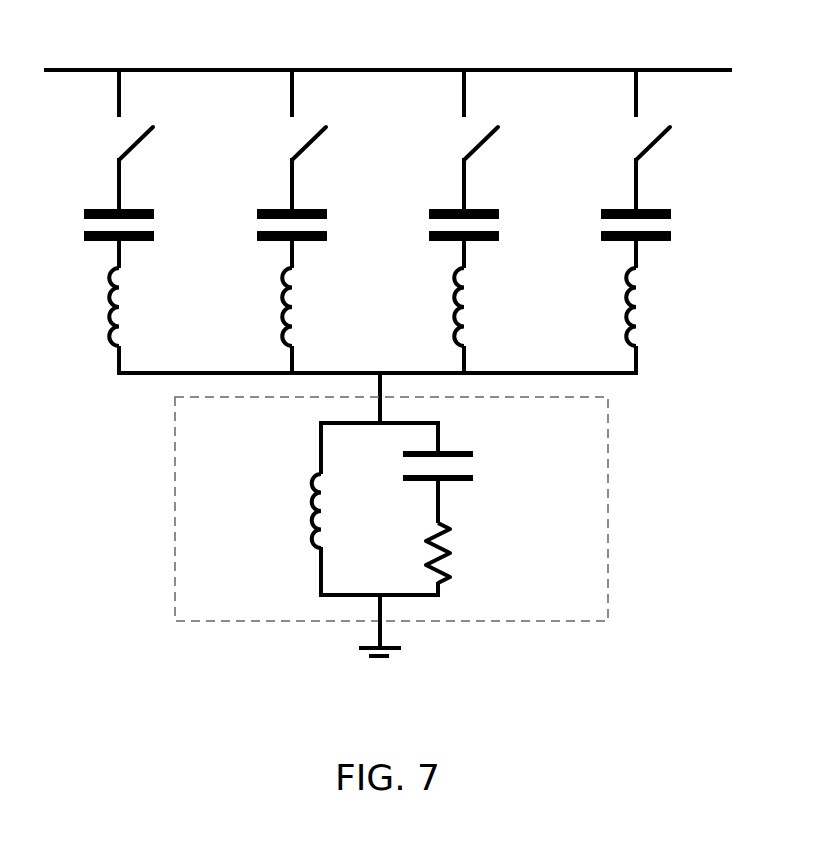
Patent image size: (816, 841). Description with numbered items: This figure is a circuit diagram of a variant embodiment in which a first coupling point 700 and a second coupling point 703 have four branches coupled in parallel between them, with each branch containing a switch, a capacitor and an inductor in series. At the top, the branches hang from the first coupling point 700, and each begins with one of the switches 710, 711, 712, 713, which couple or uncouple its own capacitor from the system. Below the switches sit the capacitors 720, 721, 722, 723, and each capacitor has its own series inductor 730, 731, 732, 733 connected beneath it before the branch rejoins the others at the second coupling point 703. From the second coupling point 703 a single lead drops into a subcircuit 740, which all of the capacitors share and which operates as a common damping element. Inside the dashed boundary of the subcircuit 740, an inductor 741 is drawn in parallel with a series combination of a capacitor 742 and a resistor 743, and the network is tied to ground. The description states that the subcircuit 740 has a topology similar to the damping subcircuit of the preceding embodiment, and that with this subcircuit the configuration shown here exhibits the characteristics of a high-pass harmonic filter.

The first coupling point 700 is at (350, 68).
The second coupling point 703 is at (610, 375).
The switch 710 is at (137, 145).
The switch 711 is at (310, 145).
The switch 712 is at (481, 145).
The switch 713 is at (654, 147).
The capacitor 720 is at (100, 209).
The capacitor 721 is at (272, 209).
The capacitor 722 is at (450, 209).
The capacitor 723 is at (618, 209).
The series inductor 730 is at (103, 300).
The series inductor 731 is at (277, 300).
The series inductor 732 is at (449, 300).
The series inductor 733 is at (622, 300).
The subcircuit 740 is at (175, 545).
The inductor 741 is at (305, 545).
The capacitor 742 is at (467, 483).
The resistor 743 is at (445, 570).